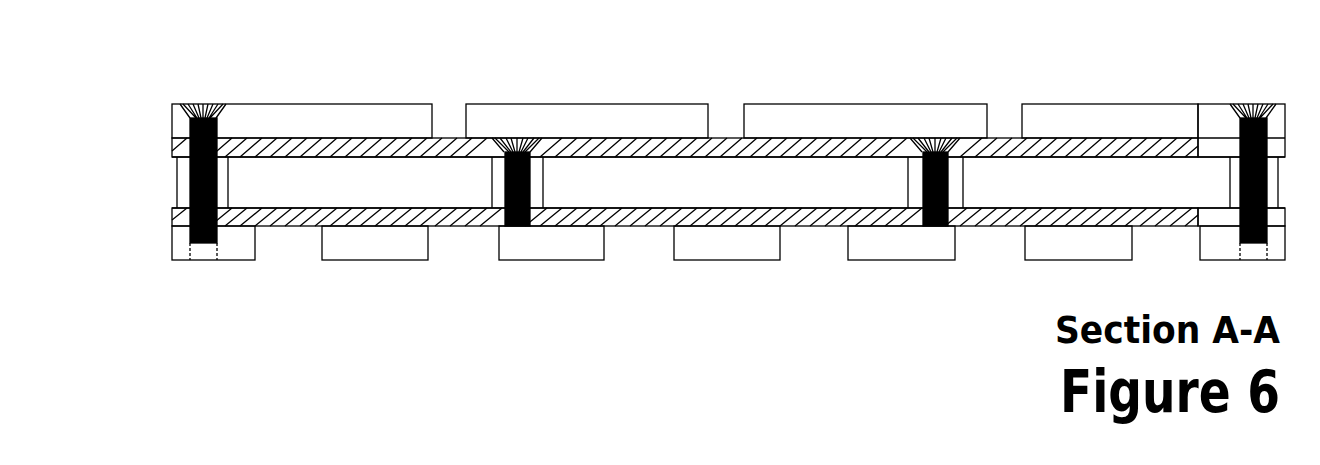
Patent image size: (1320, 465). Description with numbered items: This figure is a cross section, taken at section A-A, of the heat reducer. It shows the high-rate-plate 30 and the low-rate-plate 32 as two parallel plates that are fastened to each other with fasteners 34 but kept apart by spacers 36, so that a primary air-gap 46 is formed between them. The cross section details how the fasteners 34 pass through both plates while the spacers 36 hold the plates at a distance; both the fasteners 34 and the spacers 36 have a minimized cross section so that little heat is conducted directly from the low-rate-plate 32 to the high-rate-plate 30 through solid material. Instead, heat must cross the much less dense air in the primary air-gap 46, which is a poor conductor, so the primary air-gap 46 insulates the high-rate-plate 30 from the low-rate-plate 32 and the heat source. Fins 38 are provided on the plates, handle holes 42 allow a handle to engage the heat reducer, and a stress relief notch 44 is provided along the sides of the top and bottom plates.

The high-rate-plate 30 is at (158, 138).
The low-rate-plate 32 is at (162, 230).
The fastener 34 is at (187, 95).
The spacer 36 is at (170, 182).
The fins 38 is at (1115, 102).
The handle holes 42 is at (1222, 147).
The stress relief notch 44 is at (447, 118).
The primary air-gap 46 is at (1037, 185).